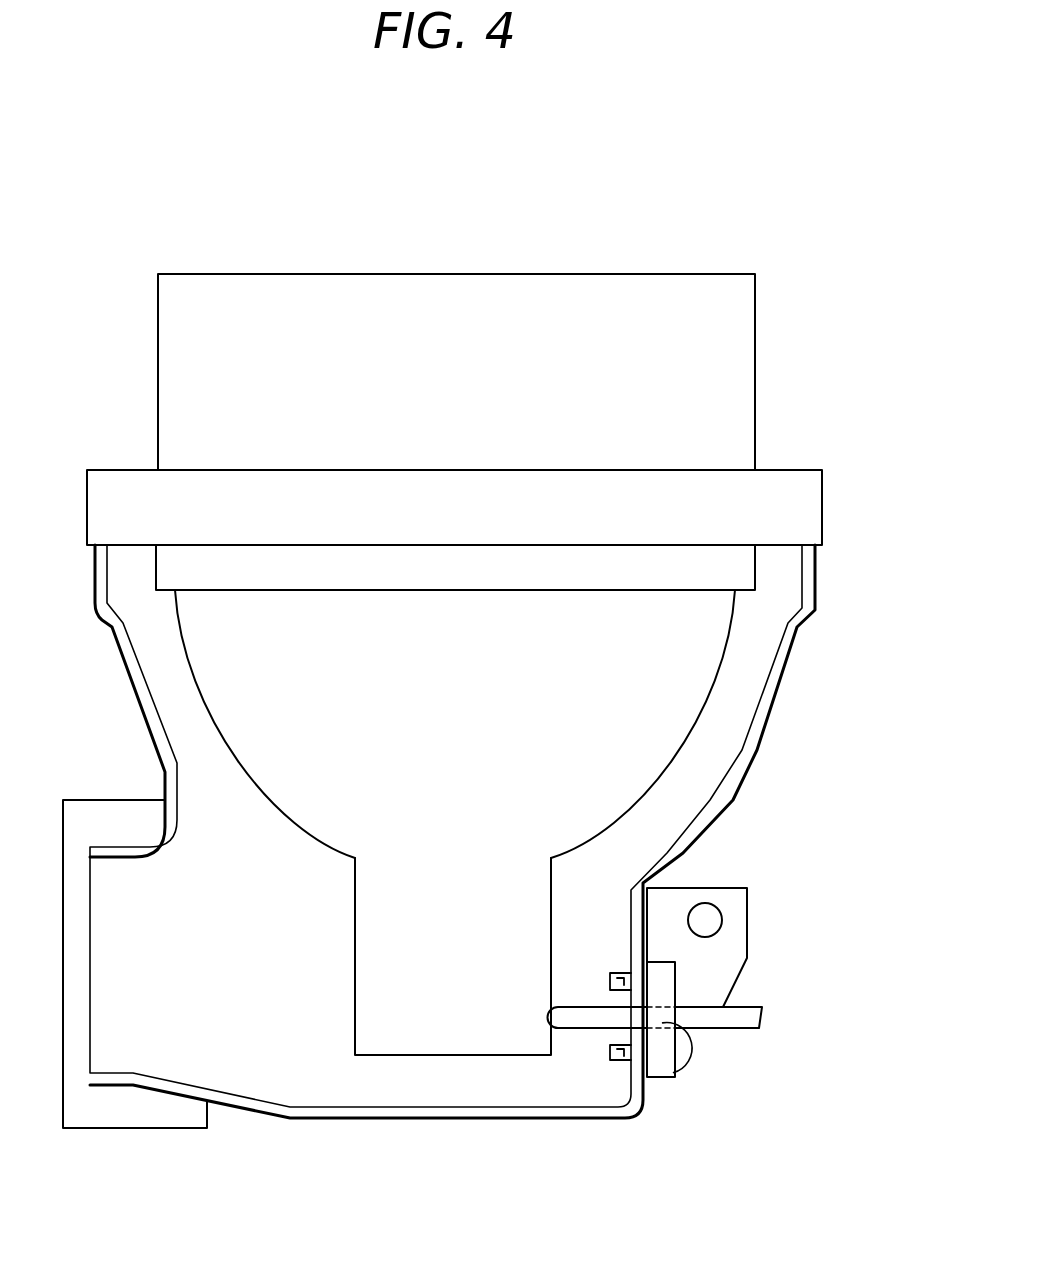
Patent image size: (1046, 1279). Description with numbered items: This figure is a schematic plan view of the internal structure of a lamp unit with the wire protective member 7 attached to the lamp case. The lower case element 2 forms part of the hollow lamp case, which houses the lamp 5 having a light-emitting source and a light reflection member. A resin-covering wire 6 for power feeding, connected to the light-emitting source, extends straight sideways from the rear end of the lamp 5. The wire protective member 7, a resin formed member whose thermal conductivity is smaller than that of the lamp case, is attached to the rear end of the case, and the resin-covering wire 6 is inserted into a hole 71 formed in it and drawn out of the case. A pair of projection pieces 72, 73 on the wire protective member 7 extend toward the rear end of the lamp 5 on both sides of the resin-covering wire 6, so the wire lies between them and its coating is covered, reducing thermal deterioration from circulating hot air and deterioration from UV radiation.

The lower case element 2 is at (740, 778).
The lamp 5 is at (780, 723).
The resin-covering wire 6 is at (745, 1027).
The wire protective member 7 is at (758, 932).
The hole 71 is at (674, 1073).
The projection piece 72 is at (617, 1060).
The projection piece 73 is at (620, 973).